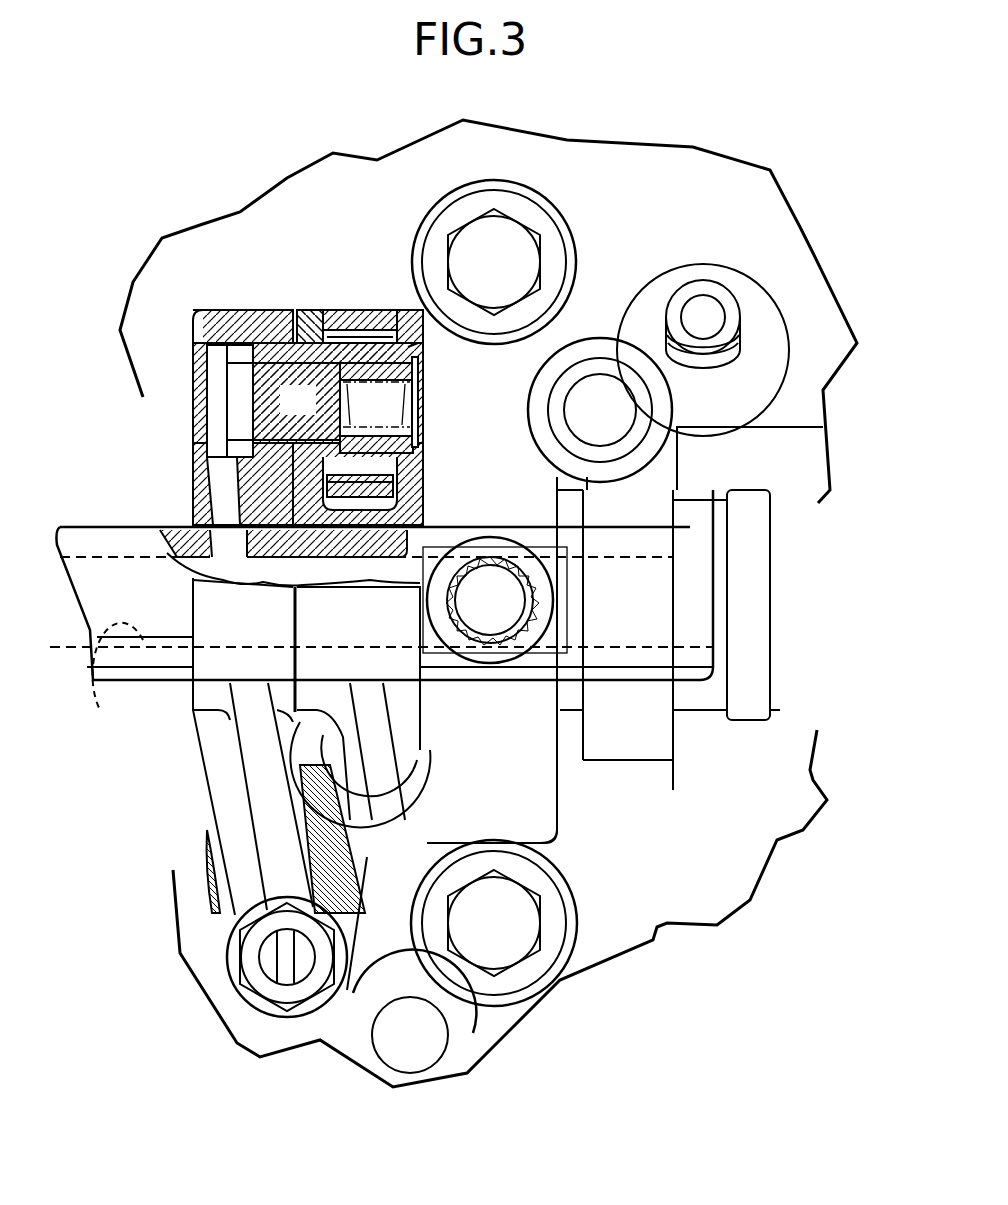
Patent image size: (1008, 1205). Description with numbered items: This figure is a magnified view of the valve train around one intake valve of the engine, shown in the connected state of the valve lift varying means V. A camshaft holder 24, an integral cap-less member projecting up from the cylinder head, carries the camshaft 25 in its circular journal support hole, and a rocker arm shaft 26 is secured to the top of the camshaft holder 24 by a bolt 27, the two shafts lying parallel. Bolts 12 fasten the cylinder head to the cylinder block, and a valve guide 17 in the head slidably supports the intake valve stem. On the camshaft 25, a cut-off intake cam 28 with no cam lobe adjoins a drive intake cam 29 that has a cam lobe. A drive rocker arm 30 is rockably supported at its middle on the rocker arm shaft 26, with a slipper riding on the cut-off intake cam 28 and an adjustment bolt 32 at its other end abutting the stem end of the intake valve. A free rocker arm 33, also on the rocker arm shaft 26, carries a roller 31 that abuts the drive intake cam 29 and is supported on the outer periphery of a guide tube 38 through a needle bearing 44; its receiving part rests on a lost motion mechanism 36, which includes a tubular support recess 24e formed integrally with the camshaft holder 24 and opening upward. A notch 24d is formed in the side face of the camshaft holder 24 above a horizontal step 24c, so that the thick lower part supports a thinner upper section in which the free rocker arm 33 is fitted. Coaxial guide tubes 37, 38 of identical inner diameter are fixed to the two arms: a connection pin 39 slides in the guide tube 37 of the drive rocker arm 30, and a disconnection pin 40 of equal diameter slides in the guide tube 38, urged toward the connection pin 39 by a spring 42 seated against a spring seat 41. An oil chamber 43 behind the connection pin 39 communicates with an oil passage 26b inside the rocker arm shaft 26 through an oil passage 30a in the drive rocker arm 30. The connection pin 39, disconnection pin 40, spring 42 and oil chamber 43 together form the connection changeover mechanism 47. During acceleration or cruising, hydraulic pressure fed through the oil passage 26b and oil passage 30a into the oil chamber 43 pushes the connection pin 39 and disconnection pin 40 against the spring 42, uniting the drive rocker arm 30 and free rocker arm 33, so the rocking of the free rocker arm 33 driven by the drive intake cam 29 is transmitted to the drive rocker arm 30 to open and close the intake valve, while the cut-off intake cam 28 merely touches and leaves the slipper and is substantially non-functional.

The bolt 12 is at (510, 278).
The valve guide 17 is at (733, 350).
The camshaft holder 24 is at (420, 637).
The horizontal step 24c is at (630, 787).
The notch 24d is at (560, 800).
The tubular support recess 24e is at (627, 423).
The camshaft 25 is at (783, 715).
The rocker arm shaft 26 is at (105, 523).
The oil passage 26b is at (114, 682).
The bolt 27 is at (506, 615).
The cut-off intake cam 28 is at (750, 605).
The drive intake cam 29 is at (647, 740).
The drive rocker arm 30 is at (190, 743).
The oil passage 30a is at (213, 482).
The roller 31 is at (360, 320).
The adjustment bolt 32 is at (263, 960).
The free rocker arm 33 is at (297, 598).
The lost motion mechanism 36 is at (395, 862).
The guide tube 37 is at (255, 353).
The guide tube 38 is at (380, 353).
The connection pin 39 is at (315, 415).
The disconnection pin 40 is at (413, 347).
The spring seat 41 is at (420, 436).
The spring 42 is at (407, 380).
The oil chamber 43 is at (237, 407).
The needle bearing 44 is at (340, 340).
The connection changeover mechanism 47 is at (428, 407).
The valve lift varying means V is at (190, 828).